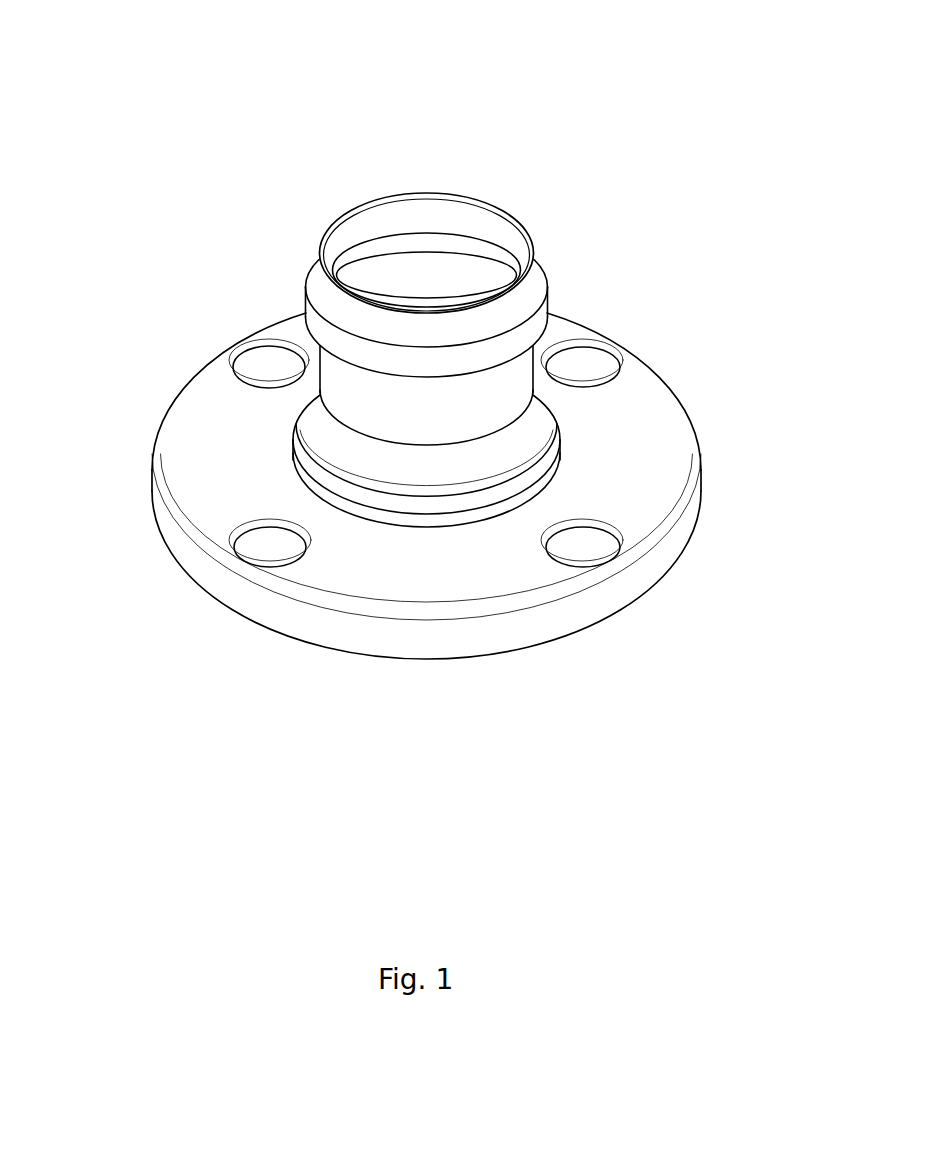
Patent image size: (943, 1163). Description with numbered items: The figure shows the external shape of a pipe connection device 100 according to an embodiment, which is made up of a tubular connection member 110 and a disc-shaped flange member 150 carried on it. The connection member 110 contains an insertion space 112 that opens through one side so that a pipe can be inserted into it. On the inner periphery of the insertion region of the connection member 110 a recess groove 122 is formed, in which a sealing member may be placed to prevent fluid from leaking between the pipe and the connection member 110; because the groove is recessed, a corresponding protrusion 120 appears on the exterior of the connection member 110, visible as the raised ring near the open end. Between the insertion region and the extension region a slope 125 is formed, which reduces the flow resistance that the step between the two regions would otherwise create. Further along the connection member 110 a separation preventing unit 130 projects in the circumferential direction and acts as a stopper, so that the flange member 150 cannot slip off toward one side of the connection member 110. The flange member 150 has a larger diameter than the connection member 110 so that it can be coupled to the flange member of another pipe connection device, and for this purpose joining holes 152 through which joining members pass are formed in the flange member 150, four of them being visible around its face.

The pipe connection device 100 is at (141, 37).
The connection member 110 is at (535, 203).
The insertion space 112 is at (447, 214).
The recess groove 122 is at (393, 247).
The protrusion 120 is at (546, 297).
The slope 125 is at (318, 427).
The separation preventing unit 130 is at (560, 436).
The flange member 150 is at (419, 672).
The joining hole 152 is at (573, 548).